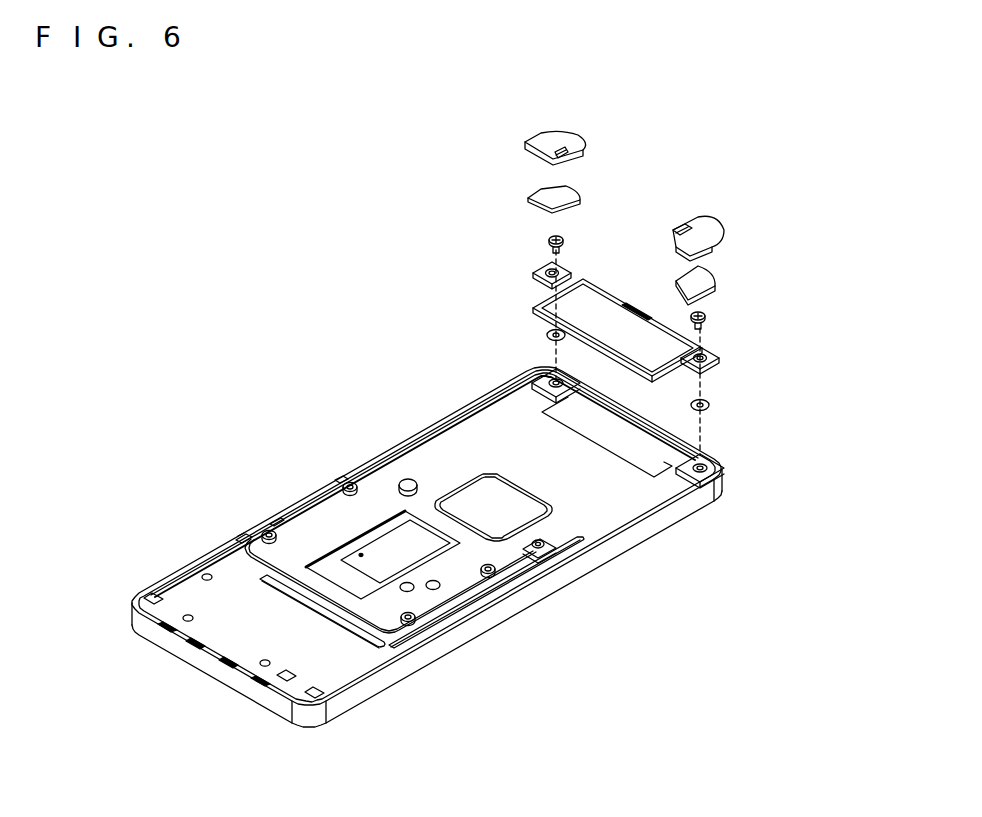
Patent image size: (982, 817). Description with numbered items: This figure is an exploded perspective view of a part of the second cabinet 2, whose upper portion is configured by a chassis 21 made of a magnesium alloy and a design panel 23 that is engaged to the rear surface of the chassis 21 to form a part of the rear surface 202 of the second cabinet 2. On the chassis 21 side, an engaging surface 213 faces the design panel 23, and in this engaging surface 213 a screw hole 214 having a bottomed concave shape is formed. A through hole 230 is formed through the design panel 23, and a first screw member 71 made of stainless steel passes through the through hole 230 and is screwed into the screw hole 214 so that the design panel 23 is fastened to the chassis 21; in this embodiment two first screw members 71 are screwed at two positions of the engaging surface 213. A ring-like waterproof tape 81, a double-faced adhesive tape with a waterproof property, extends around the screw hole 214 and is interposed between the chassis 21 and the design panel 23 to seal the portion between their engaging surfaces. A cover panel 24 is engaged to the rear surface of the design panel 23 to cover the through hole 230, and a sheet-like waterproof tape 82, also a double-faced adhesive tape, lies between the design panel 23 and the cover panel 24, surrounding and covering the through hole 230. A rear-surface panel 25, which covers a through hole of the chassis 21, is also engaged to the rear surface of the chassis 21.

The second cabinet 2 is at (340, 462).
The chassis 21 is at (573, 568).
The design panel 23 is at (606, 302).
The cover panel 24 is at (550, 137).
The rear-surface panel 25 is at (350, 666).
The first screw member 71 is at (551, 239).
The waterproof tape 81 is at (548, 335).
The waterproof tape 82 is at (540, 192).
The rear surface 202 is at (455, 466).
The engaging surface 213 is at (682, 490).
The screw hole 214 is at (545, 376).
The through hole 230 is at (547, 274).